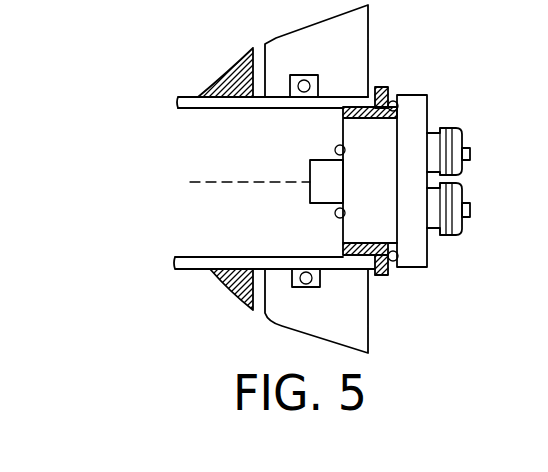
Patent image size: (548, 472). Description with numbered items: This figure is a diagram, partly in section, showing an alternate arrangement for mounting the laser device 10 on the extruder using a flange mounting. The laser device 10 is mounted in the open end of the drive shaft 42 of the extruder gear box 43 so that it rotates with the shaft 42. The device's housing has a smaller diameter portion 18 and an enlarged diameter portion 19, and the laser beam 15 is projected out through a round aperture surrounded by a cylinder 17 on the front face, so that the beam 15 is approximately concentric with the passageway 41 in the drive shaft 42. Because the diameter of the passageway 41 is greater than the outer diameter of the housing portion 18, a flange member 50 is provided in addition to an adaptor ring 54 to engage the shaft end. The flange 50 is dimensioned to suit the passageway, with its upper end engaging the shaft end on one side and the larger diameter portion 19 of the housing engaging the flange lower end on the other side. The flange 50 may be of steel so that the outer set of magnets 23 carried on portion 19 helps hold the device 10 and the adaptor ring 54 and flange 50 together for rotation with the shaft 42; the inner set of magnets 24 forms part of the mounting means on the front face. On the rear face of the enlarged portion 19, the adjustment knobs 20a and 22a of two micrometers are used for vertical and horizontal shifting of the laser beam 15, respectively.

The laser device 10 is at (468, 108).
The laser beam 15 is at (218, 182).
The cylinder 17 is at (323, 160).
The smaller diameter portion 18 is at (385, 221).
The enlarged diameter portion 19 is at (413, 248).
The adjustment knob 20a is at (464, 143).
The adjustment knob 22a is at (464, 193).
The outer set of magnets 23 is at (394, 105).
The inner set of magnets 24 is at (338, 214).
The passageway 41 is at (207, 109).
The drive shaft 42 is at (193, 97).
The extruder gear box 43 is at (347, 318).
The flange member 50 is at (379, 87).
The adaptor ring 54 is at (355, 102).